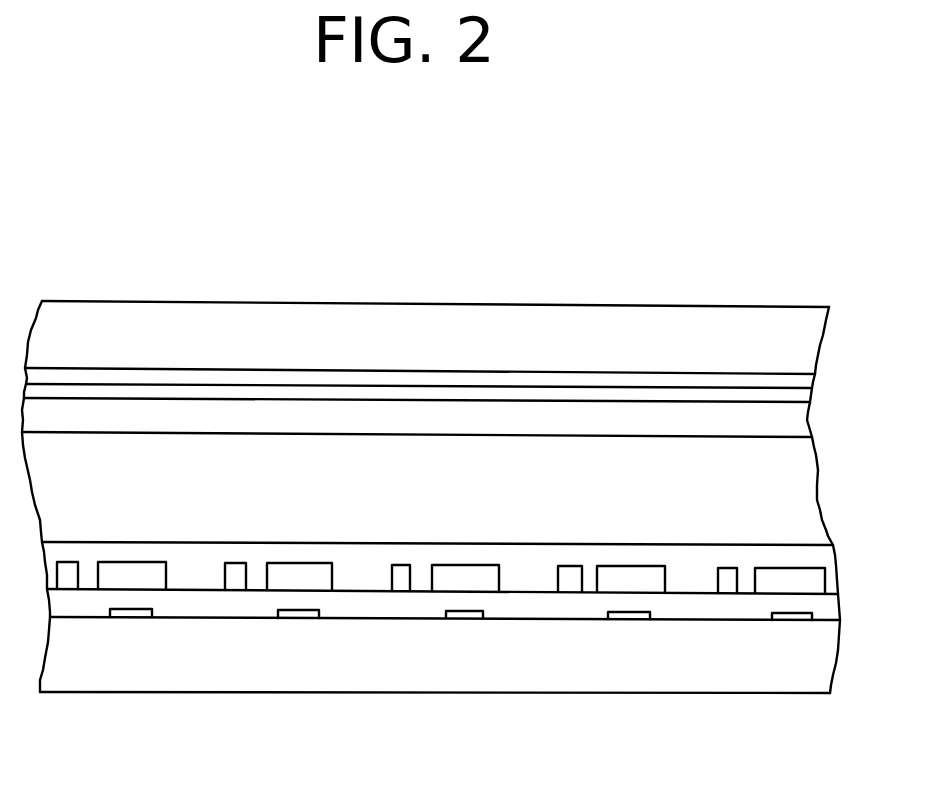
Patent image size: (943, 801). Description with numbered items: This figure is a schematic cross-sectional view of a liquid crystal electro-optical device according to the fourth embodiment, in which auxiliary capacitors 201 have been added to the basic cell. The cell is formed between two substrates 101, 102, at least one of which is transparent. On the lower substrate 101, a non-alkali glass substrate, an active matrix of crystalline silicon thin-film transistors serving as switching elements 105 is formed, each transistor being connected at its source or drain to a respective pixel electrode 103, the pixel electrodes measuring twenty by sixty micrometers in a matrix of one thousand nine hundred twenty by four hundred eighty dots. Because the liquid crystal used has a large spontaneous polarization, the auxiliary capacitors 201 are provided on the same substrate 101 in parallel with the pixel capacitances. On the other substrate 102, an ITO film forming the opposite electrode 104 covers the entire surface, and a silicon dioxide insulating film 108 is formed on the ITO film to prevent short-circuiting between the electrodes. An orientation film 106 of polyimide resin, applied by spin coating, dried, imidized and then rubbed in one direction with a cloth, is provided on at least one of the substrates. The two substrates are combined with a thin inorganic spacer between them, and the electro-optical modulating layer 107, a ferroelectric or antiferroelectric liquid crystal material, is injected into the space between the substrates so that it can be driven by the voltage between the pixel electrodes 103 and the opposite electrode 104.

The substrate 101 is at (357, 668).
The substrate 102 is at (518, 338).
The pixel electrode 103 is at (807, 585).
The opposite electrode 104 is at (630, 378).
The switching element 105 is at (728, 580).
The orientation film 106 is at (157, 420).
The electro-optical modulating layer 107 is at (223, 505).
The insulating film 108 is at (258, 396).
The auxiliary capacitor 201 is at (462, 620).